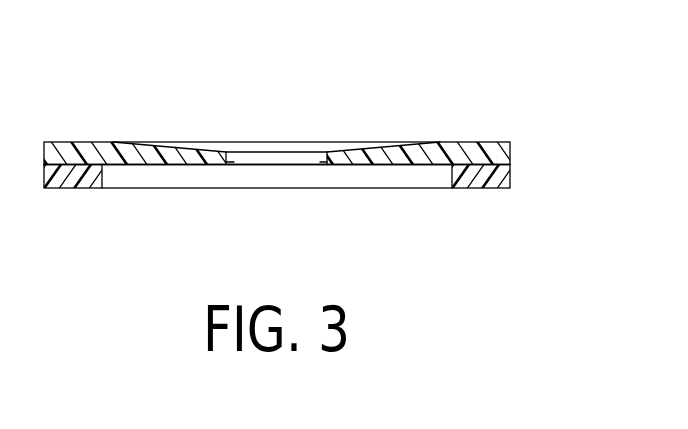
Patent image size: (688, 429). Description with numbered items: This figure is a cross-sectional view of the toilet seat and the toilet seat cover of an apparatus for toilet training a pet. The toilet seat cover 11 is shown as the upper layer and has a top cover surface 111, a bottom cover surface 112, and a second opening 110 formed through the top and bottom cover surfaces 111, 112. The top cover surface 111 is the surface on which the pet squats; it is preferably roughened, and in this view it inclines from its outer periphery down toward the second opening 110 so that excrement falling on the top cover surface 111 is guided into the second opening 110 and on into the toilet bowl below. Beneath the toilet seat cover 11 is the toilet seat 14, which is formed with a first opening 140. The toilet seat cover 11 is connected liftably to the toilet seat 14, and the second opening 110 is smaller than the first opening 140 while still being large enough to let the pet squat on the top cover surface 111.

The toilet seat cover 11 is at (503, 153).
The second opening 110 is at (271, 158).
The top cover surface 111 is at (397, 147).
The bottom cover surface 112 is at (412, 166).
The toilet seat 14 is at (503, 177).
The first opening 140 is at (277, 215).